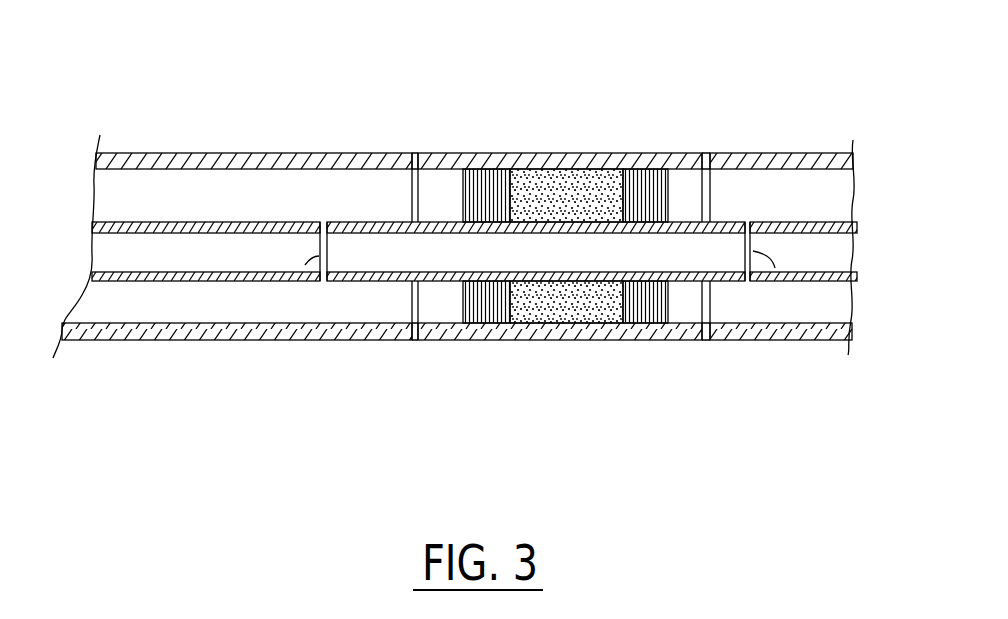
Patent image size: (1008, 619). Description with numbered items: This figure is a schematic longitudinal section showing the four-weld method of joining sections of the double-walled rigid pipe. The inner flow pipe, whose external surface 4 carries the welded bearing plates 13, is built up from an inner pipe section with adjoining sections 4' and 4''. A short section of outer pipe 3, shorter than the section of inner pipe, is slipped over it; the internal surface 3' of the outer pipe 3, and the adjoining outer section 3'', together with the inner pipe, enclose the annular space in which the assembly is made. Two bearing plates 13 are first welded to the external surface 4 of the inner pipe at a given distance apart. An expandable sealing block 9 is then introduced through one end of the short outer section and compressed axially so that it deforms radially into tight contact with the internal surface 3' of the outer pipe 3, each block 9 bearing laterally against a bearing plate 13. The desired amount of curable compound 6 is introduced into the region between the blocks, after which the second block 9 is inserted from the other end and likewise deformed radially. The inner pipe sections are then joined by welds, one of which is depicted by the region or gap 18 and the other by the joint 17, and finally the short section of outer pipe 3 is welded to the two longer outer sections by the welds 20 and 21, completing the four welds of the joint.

The outer pipe 3 is at (632, 202).
The internal surface of the outer pipe 3' is at (237, 194).
The second outer tube section 3'' is at (560, 188).
The external surface of the inner pipe 4 is at (563, 225).
The first inner tube section 4' is at (206, 316).
The second inner tube section 4'' is at (681, 304).
The curable compound 6 is at (563, 192).
The sealing block 9 is at (478, 168).
The bearing plate 13 is at (512, 326).
The weld seam of inner tube 17 is at (305, 265).
The weld 18 is at (775, 268).
The weld 20 is at (707, 155).
The weld 21 is at (412, 155).